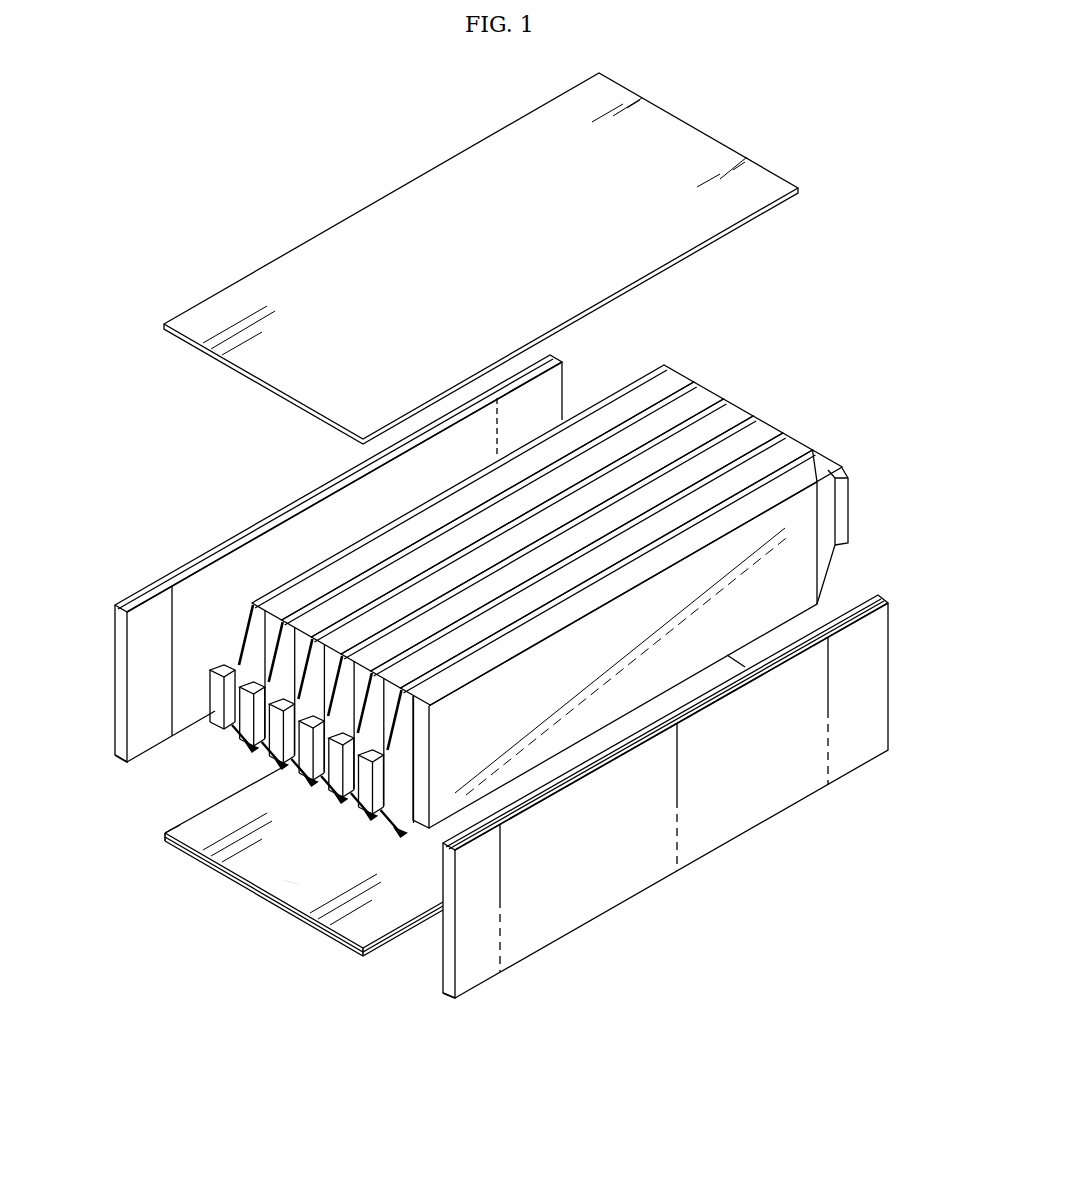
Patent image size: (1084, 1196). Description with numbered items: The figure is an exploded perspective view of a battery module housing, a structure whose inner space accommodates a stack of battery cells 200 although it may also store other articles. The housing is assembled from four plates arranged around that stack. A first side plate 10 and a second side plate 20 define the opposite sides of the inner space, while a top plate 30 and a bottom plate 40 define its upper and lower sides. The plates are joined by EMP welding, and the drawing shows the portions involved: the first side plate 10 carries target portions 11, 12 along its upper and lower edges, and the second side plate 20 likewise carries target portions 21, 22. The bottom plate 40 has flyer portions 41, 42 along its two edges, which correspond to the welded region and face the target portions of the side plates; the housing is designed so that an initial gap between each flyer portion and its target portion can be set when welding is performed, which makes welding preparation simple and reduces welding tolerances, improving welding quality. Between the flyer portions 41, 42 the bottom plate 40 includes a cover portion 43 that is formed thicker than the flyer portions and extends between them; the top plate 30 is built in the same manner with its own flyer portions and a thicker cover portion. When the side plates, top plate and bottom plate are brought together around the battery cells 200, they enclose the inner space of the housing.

The first side plate 10 is at (668, 800).
The target portion 11 is at (888, 598).
The target portion 12 is at (452, 997).
The second side plate 20 is at (327, 583).
The target portion 21 is at (248, 535).
The target portion 22 is at (120, 757).
The top plate 30 is at (368, 196).
The bottom plate 40 is at (282, 877).
The flyer portion 41 is at (357, 952).
The flyer portion 42 is at (165, 838).
The cover portion 43 is at (288, 891).
The battery cells 200 is at (749, 396).